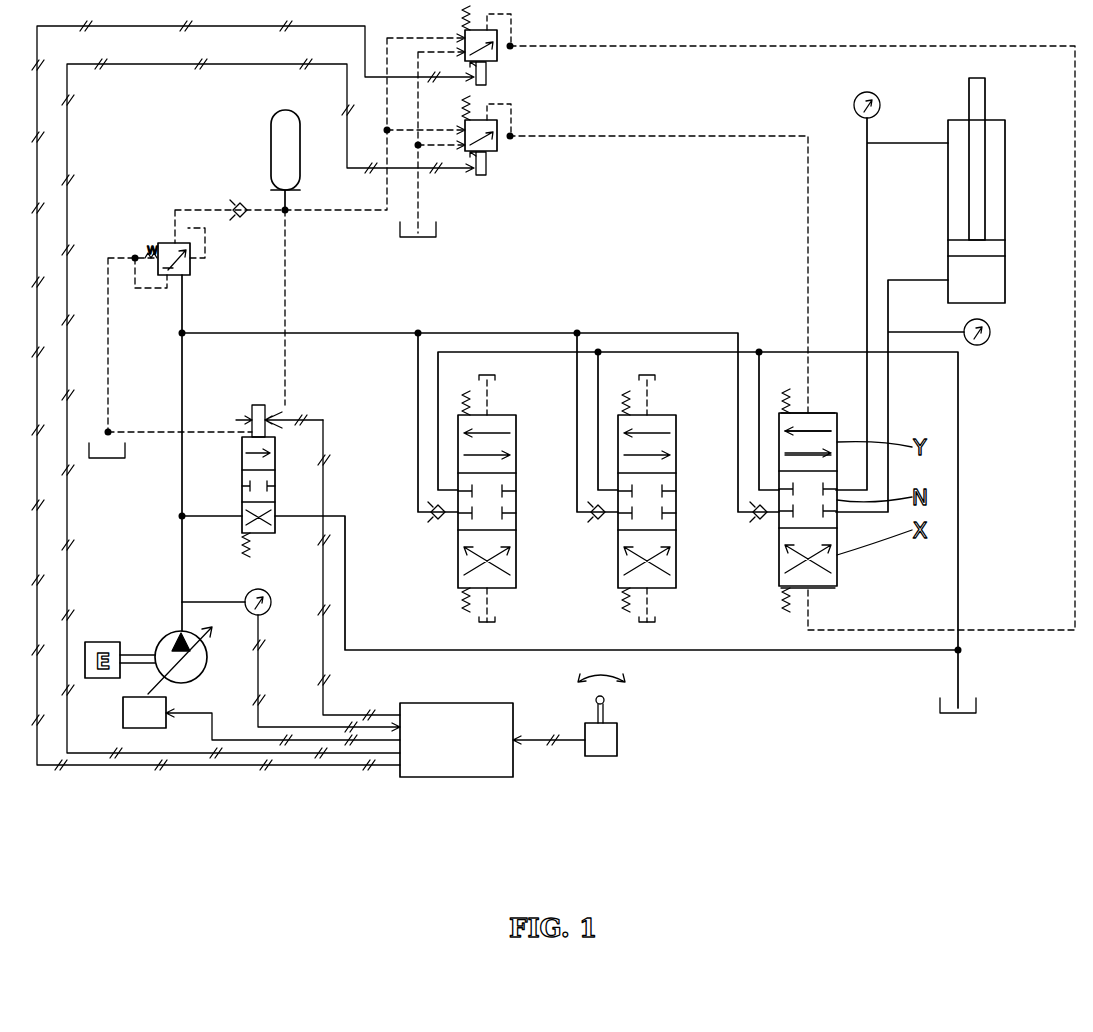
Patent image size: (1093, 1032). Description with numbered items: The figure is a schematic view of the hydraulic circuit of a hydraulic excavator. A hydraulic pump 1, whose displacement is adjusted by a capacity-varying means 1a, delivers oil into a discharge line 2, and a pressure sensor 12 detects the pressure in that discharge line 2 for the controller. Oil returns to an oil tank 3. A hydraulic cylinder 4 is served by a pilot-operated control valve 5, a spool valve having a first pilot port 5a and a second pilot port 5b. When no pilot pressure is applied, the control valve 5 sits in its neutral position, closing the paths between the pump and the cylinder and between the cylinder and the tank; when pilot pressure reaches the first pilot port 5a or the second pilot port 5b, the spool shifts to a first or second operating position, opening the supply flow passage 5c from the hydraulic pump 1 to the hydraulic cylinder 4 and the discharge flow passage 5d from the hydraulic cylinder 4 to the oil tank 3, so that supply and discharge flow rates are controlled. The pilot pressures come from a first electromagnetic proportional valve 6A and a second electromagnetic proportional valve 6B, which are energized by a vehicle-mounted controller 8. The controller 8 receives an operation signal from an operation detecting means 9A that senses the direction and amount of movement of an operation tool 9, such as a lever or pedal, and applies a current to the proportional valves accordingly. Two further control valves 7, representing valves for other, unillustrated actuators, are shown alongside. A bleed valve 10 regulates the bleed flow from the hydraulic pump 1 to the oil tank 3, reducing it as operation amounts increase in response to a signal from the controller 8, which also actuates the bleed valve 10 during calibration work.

The hydraulic pump 1 is at (163, 640).
The capacity-varying means 1a is at (147, 730).
The discharge line 2 is at (185, 368).
The oil tank 3 is at (418, 240).
The hydraulic cylinder 4 is at (993, 115).
The control valve 5 is at (798, 374).
The first pilot port 5a is at (808, 590).
The second pilot port 5b is at (810, 410).
The supply flow passage 5c is at (828, 455).
The discharge flow passage 5d is at (815, 432).
The first electromagnetic proportional valve 6A is at (492, 66).
The second electromagnetic proportional valve 6B is at (492, 156).
The control valve 7 is at (508, 401).
The controller 8 is at (450, 780).
The operation tool 9 is at (606, 700).
The operation detecting means 9A is at (618, 740).
The bleed valve 10 is at (277, 473).
The pressure sensor 12 is at (268, 592).